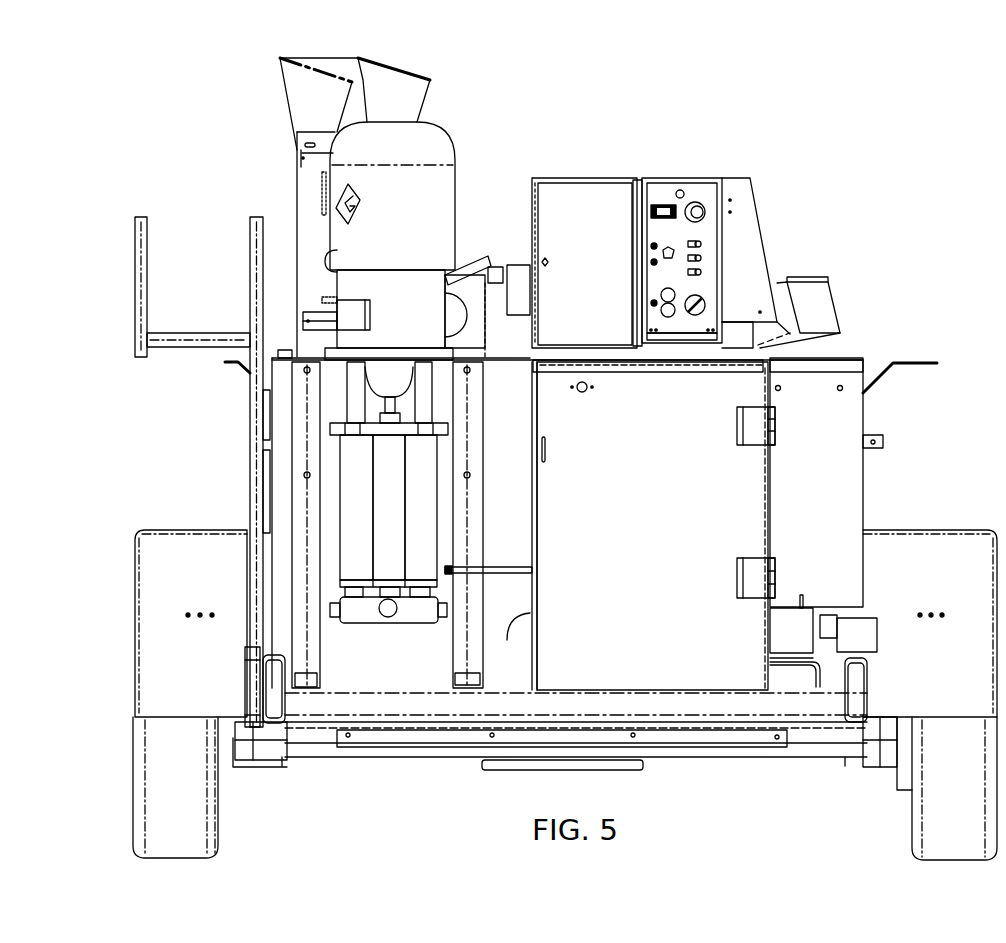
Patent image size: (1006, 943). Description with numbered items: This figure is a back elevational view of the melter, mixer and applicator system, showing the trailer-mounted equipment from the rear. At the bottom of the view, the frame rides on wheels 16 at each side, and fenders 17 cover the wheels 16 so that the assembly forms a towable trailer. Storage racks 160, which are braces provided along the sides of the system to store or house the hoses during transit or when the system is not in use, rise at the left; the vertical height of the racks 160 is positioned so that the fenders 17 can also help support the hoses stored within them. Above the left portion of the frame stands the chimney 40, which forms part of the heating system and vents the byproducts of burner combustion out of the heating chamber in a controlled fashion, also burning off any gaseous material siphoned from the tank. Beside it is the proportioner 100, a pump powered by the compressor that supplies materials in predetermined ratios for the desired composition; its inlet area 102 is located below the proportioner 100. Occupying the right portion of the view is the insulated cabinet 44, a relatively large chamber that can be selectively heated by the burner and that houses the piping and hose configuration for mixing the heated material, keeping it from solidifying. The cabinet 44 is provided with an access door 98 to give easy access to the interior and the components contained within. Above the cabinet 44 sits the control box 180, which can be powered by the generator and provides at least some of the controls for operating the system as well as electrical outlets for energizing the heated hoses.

The wheels 16 is at (188, 800).
The fenders 17 is at (195, 670).
The chimney 40 is at (300, 203).
The insulated cabinet 44 is at (648, 535).
The access door 98 is at (530, 615).
The proportioner 100 is at (410, 246).
The inlet area 102 is at (387, 626).
The storage racks 160 is at (250, 268).
The control box 180 is at (718, 178).